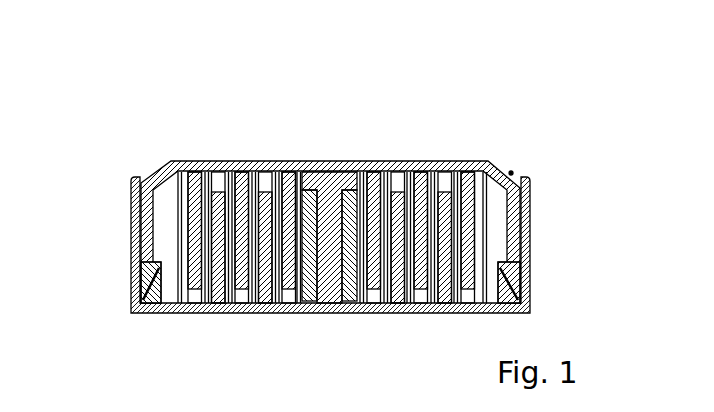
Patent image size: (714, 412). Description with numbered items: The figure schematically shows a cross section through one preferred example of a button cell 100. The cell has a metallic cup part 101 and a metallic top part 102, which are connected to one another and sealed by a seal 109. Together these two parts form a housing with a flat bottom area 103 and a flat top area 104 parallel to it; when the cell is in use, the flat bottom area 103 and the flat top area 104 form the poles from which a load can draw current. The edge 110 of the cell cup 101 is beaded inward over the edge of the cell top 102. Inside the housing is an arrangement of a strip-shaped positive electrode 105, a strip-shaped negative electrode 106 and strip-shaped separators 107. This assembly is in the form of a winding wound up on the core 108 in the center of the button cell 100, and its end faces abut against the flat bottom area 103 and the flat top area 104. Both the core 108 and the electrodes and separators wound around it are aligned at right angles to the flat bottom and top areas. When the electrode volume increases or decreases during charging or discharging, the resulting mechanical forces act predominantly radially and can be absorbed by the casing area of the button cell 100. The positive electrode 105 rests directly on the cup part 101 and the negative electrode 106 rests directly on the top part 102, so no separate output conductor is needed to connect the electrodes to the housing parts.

The button cell 100 is at (499, 127).
The cup part 101 is at (131, 201).
The top part 102 is at (163, 172).
The flat bottom area 103 is at (387, 311).
The flat top area 104 is at (380, 161).
The positive electrode 105 is at (438, 305).
The negative electrode 106 is at (255, 185).
The separators 107 is at (232, 302).
The core 108 is at (394, 173).
The seal 109 is at (520, 288).
The edge 110 is at (512, 172).